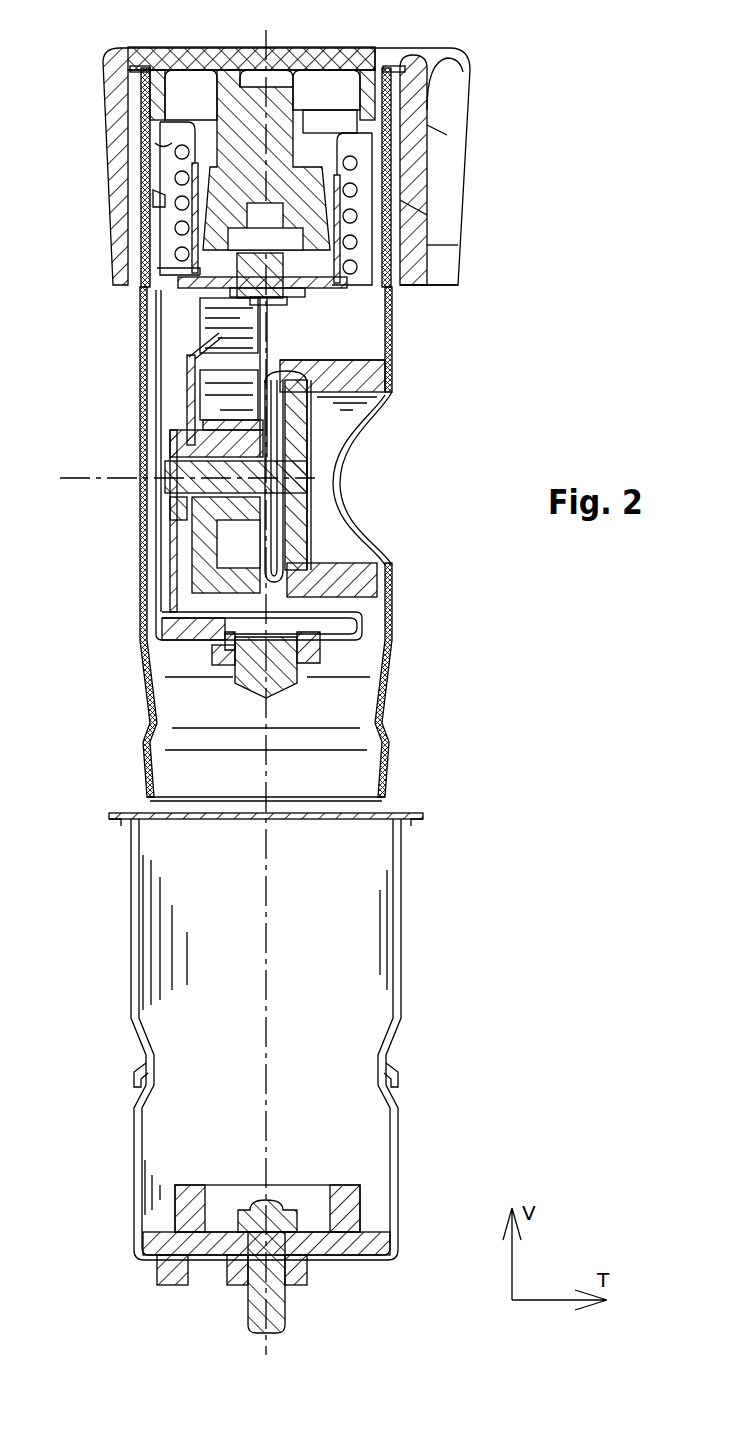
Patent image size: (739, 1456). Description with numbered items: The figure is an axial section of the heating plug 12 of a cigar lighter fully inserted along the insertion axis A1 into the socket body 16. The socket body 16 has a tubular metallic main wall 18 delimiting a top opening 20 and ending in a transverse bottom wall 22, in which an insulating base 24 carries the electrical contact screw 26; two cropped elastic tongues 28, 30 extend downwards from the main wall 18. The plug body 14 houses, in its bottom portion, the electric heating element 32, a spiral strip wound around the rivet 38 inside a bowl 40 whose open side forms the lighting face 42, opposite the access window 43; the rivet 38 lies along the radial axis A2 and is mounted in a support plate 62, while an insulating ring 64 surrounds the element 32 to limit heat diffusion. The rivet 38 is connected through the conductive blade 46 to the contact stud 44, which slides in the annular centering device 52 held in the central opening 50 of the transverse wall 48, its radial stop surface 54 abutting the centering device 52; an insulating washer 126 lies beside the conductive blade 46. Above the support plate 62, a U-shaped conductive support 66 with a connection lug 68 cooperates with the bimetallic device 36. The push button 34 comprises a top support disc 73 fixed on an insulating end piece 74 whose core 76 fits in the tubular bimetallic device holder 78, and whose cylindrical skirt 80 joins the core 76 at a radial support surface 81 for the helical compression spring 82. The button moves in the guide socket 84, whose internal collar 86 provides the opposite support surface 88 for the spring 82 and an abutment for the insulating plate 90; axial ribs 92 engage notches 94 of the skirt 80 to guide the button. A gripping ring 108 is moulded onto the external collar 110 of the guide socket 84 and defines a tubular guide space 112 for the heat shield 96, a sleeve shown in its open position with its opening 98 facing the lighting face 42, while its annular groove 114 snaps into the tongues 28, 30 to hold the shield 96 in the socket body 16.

The heating plug 12 is at (500, 210).
The plug body 14 is at (142, 597).
The socket body 16 is at (410, 992).
The main wall 18 is at (403, 938).
The opening 20 is at (394, 816).
The bottom wall 22 is at (384, 1260).
The base 24 is at (375, 1196).
The electrical contact screw 26 is at (248, 1316).
The elastic tongue 28 is at (138, 1045).
The elastic tongue 30 is at (392, 1062).
The electric heating element 32 is at (298, 434).
The push button 34 is at (383, 42).
The bimetallic device 36 is at (185, 315).
The rivet 38 is at (290, 484).
The bowl 40 is at (340, 355).
The lighting face 42 is at (327, 526).
The access window 43 is at (365, 550).
The contact stud 44 is at (289, 697).
The conductive blade 46 is at (160, 568).
The transverse wall 48 is at (183, 640).
The central opening 50 is at (228, 660).
The centering device 52 is at (318, 656).
The radial stop surface 54 is at (233, 657).
The support plate 62 is at (203, 552).
The insulating ring 64 is at (350, 372).
The conductive support 66 is at (197, 407).
The fixing and electrical connection lug 68 is at (178, 447).
The top support disc 73 is at (333, 62).
The insulating end piece 74 is at (197, 103).
The core 76 is at (165, 233).
The bimetallic device holder 78 is at (427, 274).
The cylindrical skirt 80 is at (160, 178).
The radial support surface 81 is at (167, 153).
The helical compression spring 82 is at (183, 230).
The guide socket 84 is at (445, 108).
The internal collar 86 is at (143, 310).
The radial support surface 88 is at (190, 278).
The insulating plate 90 is at (380, 304).
The axial ribs 92 is at (420, 160).
The axial notches 94 is at (447, 131).
The heat shield 96 is at (405, 612).
The opening 98 is at (355, 498).
The gripping ring 108 is at (418, 212).
The external collar 110 is at (443, 62).
The tubular guide space 112 is at (418, 250).
The annular radial groove 114 is at (383, 728).
The insulating washer 126 is at (178, 520).
The insertion axis A1 is at (268, 878).
The axis of the rivet A2 is at (97, 478).